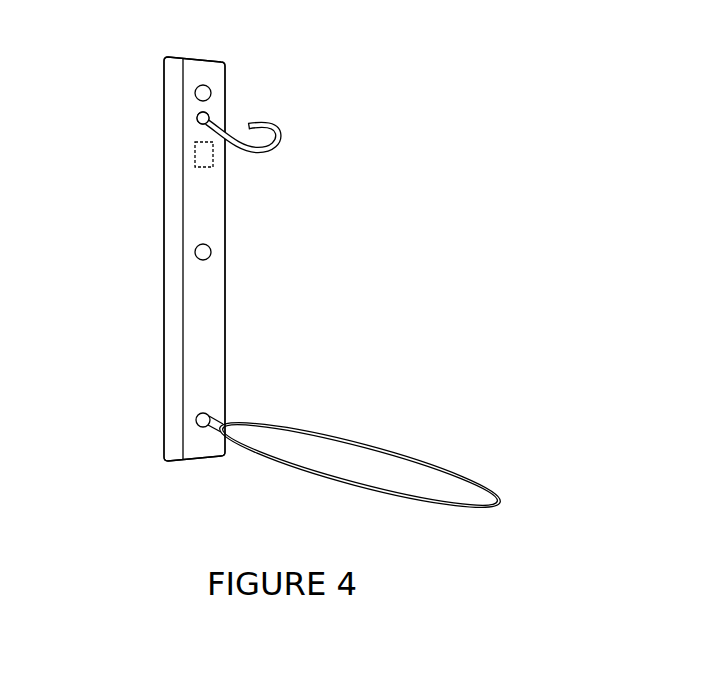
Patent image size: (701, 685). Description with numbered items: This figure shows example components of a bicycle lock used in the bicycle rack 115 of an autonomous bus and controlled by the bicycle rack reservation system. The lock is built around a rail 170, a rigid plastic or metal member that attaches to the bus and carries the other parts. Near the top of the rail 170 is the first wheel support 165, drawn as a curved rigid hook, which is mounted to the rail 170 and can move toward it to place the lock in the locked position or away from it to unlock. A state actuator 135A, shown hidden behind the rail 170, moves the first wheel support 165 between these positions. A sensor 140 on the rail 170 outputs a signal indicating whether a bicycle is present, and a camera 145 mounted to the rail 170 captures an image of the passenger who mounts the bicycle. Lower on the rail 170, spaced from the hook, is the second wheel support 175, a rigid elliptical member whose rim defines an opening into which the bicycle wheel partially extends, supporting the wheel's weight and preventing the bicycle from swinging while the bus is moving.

The bicycle rack 115 is at (102, 110).
The sensor 140 is at (212, 93).
The first wheel support 165 is at (280, 137).
The state actuator 135A is at (193, 152).
The camera 145 is at (212, 252).
The rail 170 is at (225, 355).
The second wheel support 175 is at (503, 501).